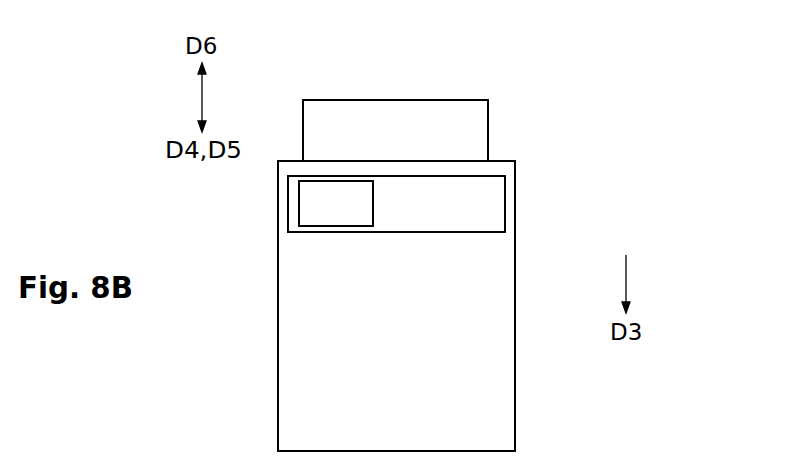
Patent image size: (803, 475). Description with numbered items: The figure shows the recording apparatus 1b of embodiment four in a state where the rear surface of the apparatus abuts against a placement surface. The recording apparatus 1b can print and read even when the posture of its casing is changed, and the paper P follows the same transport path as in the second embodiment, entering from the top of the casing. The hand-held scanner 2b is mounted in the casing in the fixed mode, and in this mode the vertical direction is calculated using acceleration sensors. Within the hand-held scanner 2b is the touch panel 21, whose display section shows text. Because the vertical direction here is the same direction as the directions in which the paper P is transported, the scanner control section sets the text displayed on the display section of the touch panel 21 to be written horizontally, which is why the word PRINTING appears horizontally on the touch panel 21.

The recording apparatus 1b is at (480, 67).
The paper P is at (397, 115).
The hand-held scanner 2b is at (487, 205).
The touch panel 21 is at (299, 212).